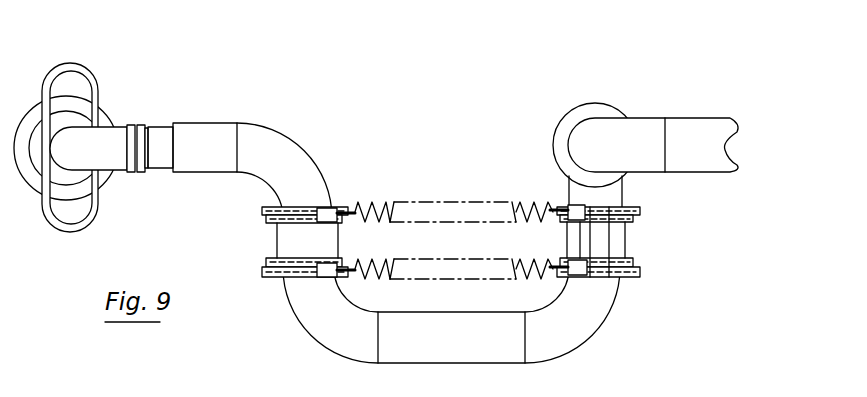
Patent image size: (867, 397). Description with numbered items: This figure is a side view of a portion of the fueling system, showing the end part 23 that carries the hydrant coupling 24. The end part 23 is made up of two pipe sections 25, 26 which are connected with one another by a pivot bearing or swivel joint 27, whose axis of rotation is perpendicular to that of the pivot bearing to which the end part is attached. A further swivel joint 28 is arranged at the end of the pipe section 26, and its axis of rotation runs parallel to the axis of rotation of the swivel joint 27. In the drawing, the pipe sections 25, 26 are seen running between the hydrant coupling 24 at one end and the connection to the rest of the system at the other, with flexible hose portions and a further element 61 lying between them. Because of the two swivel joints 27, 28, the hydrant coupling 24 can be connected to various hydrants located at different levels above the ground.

The end part 23 is at (253, 140).
The hydrant coupling 24 is at (105, 148).
The pipe section 25 is at (612, 188).
The pipe section 26 is at (454, 139).
The pivot bearing or swivel joint 27 is at (618, 243).
The further swivel joint 28 is at (298, 240).
The outlet pipe 61 is at (645, 112).